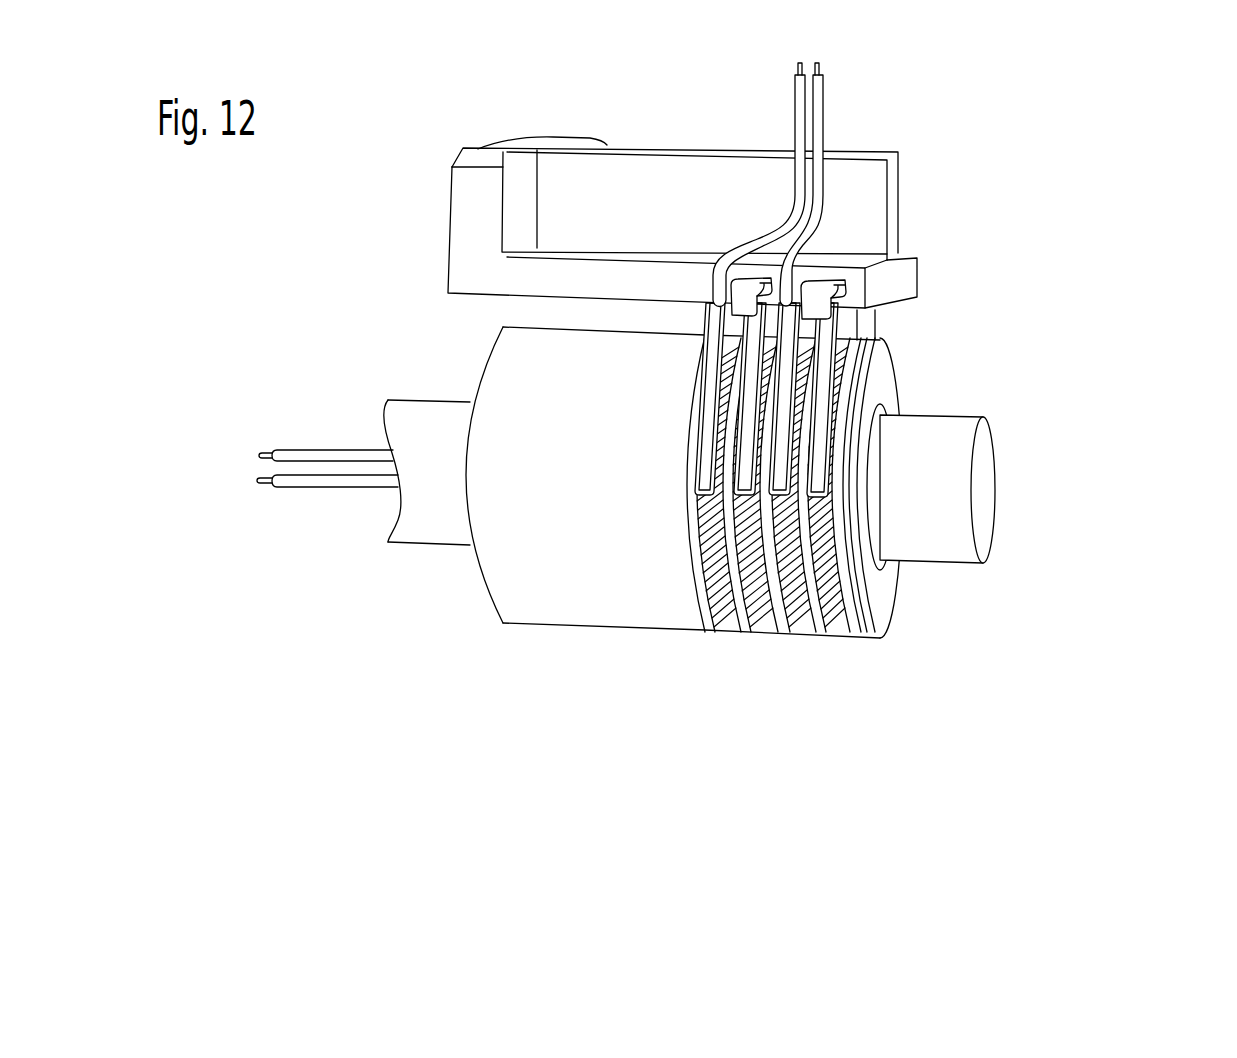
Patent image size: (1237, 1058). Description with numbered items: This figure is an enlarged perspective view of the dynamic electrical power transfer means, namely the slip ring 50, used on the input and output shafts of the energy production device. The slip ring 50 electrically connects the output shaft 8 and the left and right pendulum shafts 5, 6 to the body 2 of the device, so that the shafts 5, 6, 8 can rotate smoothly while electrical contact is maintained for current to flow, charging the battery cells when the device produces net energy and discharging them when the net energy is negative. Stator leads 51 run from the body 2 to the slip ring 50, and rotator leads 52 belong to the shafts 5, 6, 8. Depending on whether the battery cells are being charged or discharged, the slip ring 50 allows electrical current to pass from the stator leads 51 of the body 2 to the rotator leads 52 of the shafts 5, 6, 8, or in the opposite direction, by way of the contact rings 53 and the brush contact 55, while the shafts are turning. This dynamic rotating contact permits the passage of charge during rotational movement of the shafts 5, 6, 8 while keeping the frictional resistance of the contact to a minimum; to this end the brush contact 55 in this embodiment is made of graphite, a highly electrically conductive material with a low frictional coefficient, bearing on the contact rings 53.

The body 2 is at (485, 208).
The slip ring 50 is at (276, 709).
The stator leads 51 is at (802, 112).
The rotator leads 52 is at (313, 455).
The contact rings 53 is at (823, 553).
The brush contact 55 is at (788, 495).
The left pendulum shaft 5 is at (1047, 497).
The right pendulum shaft 6 is at (1047, 497).
The output shaft 8 is at (930, 495).